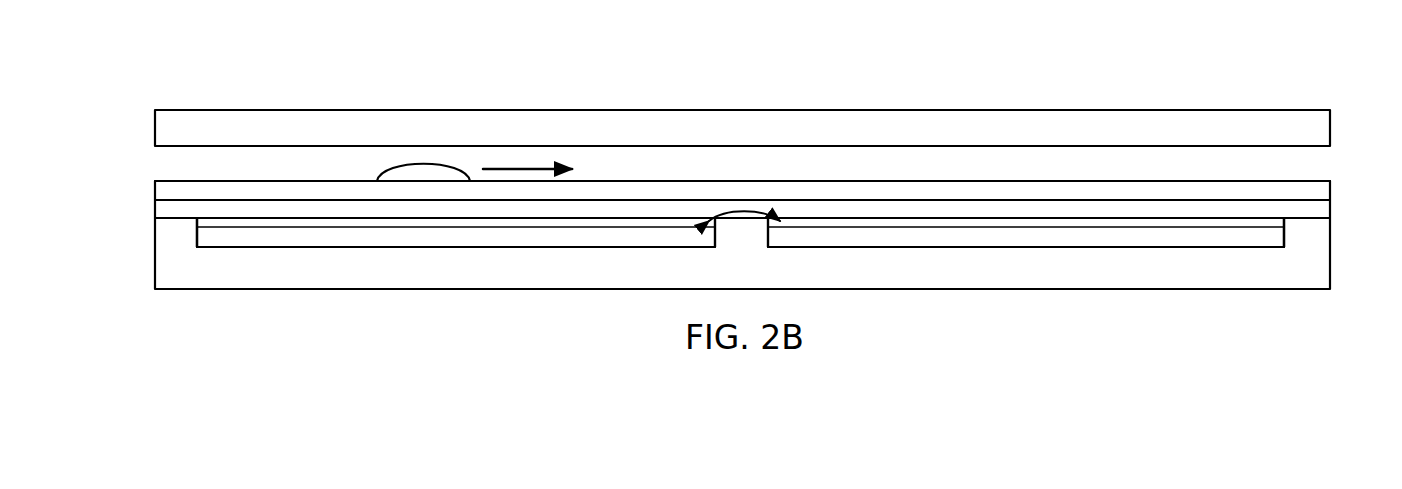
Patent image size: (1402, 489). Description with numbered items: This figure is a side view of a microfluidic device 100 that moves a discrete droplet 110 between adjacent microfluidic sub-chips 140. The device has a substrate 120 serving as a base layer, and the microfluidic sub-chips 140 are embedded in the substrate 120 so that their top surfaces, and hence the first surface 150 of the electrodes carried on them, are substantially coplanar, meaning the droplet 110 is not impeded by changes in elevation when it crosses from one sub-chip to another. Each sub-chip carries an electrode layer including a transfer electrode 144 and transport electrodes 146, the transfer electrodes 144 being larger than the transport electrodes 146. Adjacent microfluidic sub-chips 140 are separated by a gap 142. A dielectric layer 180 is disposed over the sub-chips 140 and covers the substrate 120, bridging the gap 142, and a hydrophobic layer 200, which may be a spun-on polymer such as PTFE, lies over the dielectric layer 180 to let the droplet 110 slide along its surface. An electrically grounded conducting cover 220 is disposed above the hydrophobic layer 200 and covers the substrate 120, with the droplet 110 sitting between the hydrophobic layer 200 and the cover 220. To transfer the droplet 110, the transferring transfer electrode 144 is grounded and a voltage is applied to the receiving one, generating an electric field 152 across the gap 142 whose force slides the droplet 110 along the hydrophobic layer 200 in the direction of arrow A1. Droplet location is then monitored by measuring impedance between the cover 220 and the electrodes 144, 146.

The microfluidic device 100 is at (197, 54).
The cover 220 is at (206, 110).
The hydrophobic layer 200 is at (205, 190).
The dielectric layer 180 is at (165, 210).
The substrate 120 is at (443, 275).
The microfluidic sub-chips 140 is at (328, 240).
The first surface of the electrodes 150 is at (620, 218).
The transfer electrode 144 is at (239, 224).
The transport electrodes 146 is at (757, 281).
The gap 142 is at (736, 243).
The electric field 152 is at (747, 210).
The droplet 110 is at (405, 160).
The direction of droplet movement A1 is at (524, 164).